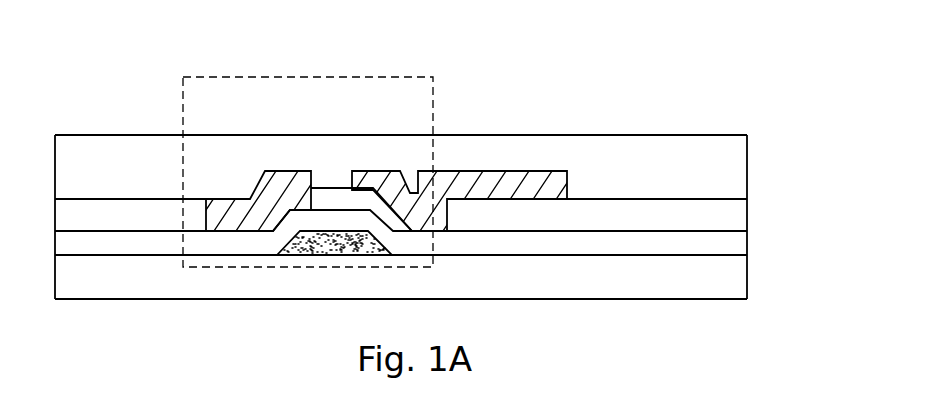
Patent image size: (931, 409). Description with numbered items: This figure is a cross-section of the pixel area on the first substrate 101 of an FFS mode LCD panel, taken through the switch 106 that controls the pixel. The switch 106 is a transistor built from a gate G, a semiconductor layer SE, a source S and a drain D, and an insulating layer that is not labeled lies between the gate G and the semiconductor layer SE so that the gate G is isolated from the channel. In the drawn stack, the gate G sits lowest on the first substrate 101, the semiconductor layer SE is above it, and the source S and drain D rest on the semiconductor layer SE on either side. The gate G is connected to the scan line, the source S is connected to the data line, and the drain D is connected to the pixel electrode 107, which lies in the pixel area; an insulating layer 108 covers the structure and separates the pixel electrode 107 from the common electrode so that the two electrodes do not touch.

The source S is at (214, 207).
The drain D is at (518, 187).
The gate G is at (383, 246).
The semiconductor layer SE is at (367, 202).
The switch 106 is at (383, 117).
The pixel electrode 107 is at (730, 213).
The insulating layer 108 is at (730, 170).
The first substrate 101 is at (730, 280).